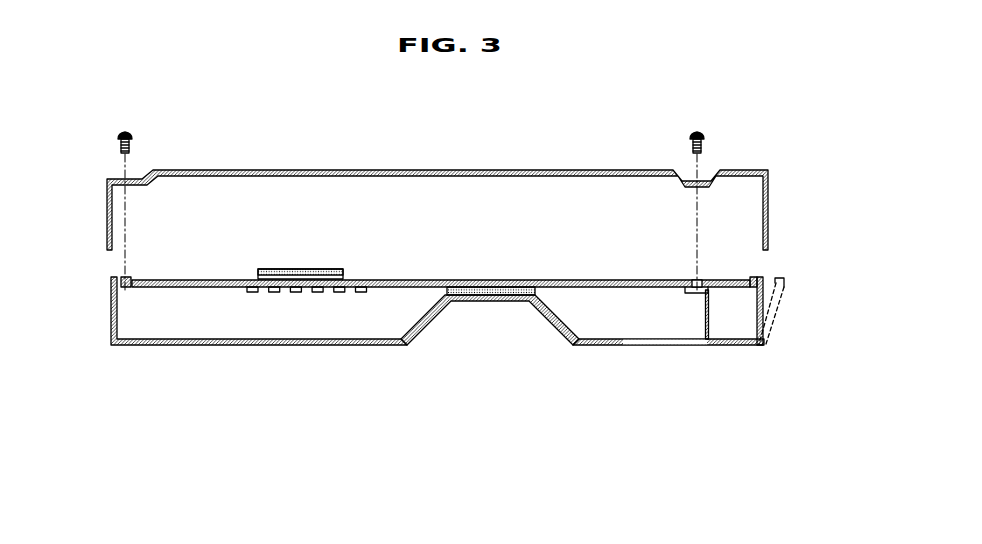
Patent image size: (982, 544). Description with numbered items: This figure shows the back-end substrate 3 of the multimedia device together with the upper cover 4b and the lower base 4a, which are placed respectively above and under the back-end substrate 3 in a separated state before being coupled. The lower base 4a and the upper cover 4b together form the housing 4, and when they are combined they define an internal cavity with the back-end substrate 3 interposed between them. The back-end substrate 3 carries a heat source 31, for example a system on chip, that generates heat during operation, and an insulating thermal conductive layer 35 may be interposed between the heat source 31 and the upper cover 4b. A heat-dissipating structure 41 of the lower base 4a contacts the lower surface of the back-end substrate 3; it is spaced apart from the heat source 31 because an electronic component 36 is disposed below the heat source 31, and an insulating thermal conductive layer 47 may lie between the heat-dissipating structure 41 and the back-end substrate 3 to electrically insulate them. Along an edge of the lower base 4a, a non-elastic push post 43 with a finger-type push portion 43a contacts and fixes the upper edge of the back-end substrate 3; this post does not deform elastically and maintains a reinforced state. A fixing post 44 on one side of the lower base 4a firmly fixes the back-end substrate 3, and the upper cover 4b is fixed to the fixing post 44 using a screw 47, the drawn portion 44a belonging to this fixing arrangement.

The back-end substrate 3 is at (441, 298).
The housing 4 is at (479, 278).
The lower base 4a is at (468, 332).
The upper cover 4b is at (768, 218).
The heat source 31 is at (345, 278).
The insulating thermal conductive layer 35 is at (307, 270).
The electronic component 36 is at (292, 292).
The heat-dissipating structure 41 is at (562, 322).
The non-elastic push post 43 is at (757, 309).
The push portion 43a is at (777, 279).
The fixing post 44 is at (107, 240).
The fixing tab 44a is at (133, 277).
The screw 47 is at (135, 140).